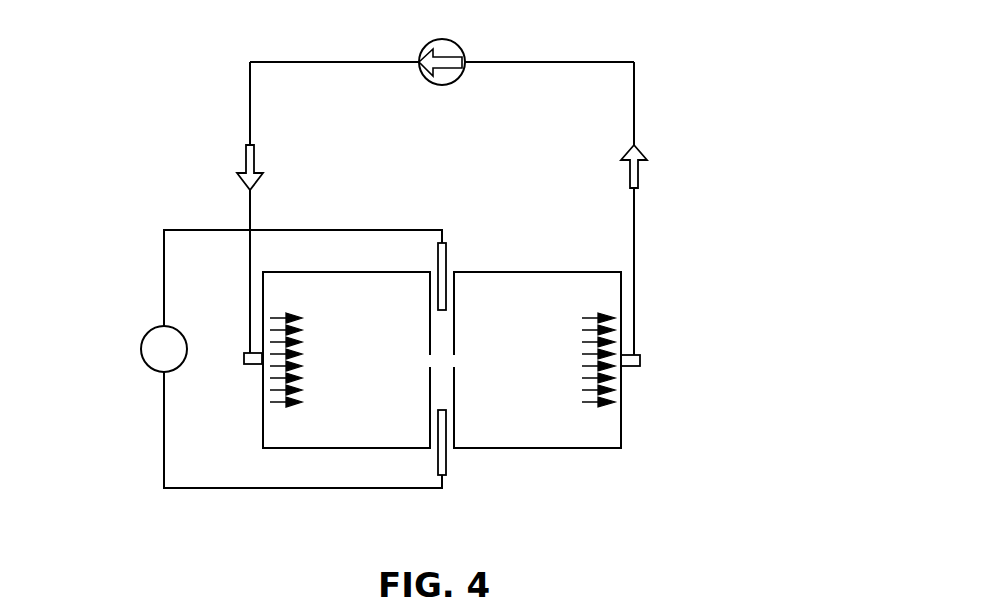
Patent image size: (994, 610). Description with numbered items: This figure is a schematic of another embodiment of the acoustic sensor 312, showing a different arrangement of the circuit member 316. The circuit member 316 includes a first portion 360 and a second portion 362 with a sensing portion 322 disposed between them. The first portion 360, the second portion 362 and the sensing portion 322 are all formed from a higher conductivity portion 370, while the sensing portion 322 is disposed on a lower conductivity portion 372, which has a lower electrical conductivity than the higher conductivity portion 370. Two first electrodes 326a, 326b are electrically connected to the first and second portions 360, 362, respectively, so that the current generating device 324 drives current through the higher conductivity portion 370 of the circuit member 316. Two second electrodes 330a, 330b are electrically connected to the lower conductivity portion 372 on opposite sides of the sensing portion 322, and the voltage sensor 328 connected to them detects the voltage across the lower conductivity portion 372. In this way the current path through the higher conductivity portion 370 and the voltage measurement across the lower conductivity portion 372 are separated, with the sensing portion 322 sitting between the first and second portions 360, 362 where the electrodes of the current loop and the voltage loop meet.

The acoustic sensor 312 is at (662, 127).
The current generating device 324 is at (459, 48).
The voltage sensor 328 is at (141, 347).
The first portion 360 is at (287, 433).
The higher conductivity portion 370 is at (340, 428).
The circuit member 316 is at (538, 453).
The second portion 362 is at (595, 435).
The sensing portion 322 is at (430, 358).
The lower conductivity portion 372 is at (443, 335).
The second electrode 330a is at (437, 250).
The second electrode 330b is at (448, 462).
The first electrode 326a is at (250, 366).
The first electrode 326b is at (634, 367).